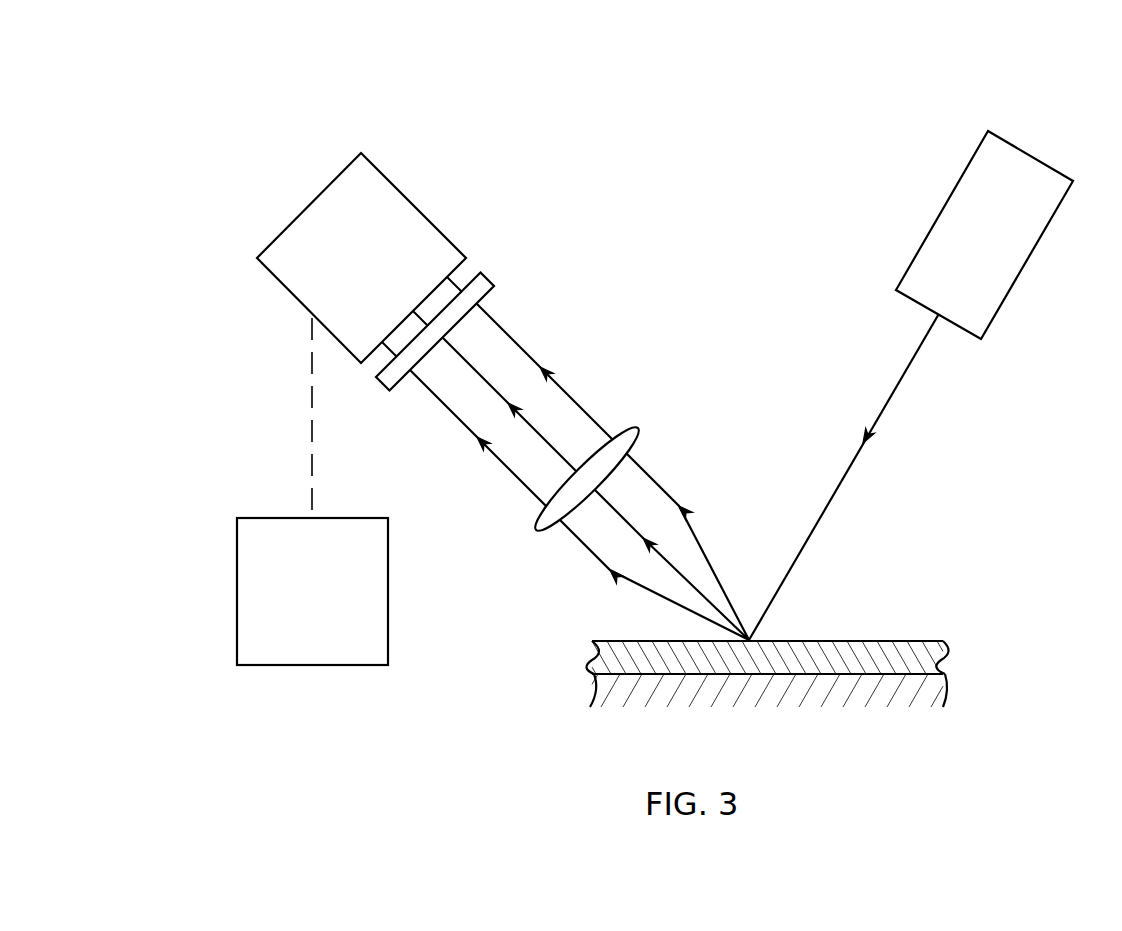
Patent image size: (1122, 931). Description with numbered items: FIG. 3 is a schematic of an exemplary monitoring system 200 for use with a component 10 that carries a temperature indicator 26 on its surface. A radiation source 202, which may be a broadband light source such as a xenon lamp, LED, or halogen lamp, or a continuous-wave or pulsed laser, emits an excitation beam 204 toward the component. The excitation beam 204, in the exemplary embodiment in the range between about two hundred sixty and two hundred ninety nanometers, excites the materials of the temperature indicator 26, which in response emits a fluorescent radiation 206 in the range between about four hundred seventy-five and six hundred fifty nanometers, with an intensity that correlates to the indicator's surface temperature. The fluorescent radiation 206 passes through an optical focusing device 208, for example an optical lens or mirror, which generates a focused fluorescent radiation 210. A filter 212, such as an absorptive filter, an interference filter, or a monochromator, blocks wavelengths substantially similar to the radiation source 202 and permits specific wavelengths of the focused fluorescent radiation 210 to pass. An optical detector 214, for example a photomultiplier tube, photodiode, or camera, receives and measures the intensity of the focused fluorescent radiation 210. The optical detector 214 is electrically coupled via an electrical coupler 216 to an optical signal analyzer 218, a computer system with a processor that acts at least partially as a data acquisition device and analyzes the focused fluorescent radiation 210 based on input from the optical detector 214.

The monitoring system 200 is at (712, 85).
The radiation source 202 is at (1007, 300).
The excitation beam 204 is at (892, 395).
The fluorescent radiation 206 is at (658, 478).
The optical focusing device 208 is at (640, 428).
The focused fluorescent radiation 210 is at (493, 315).
The filter 212 is at (490, 275).
The optical detector 214 is at (390, 173).
The electrical coupler 216 is at (312, 392).
The optical signal analyzer 218 is at (388, 588).
The temperature indicator 26 is at (927, 640).
The component 10 is at (942, 687).